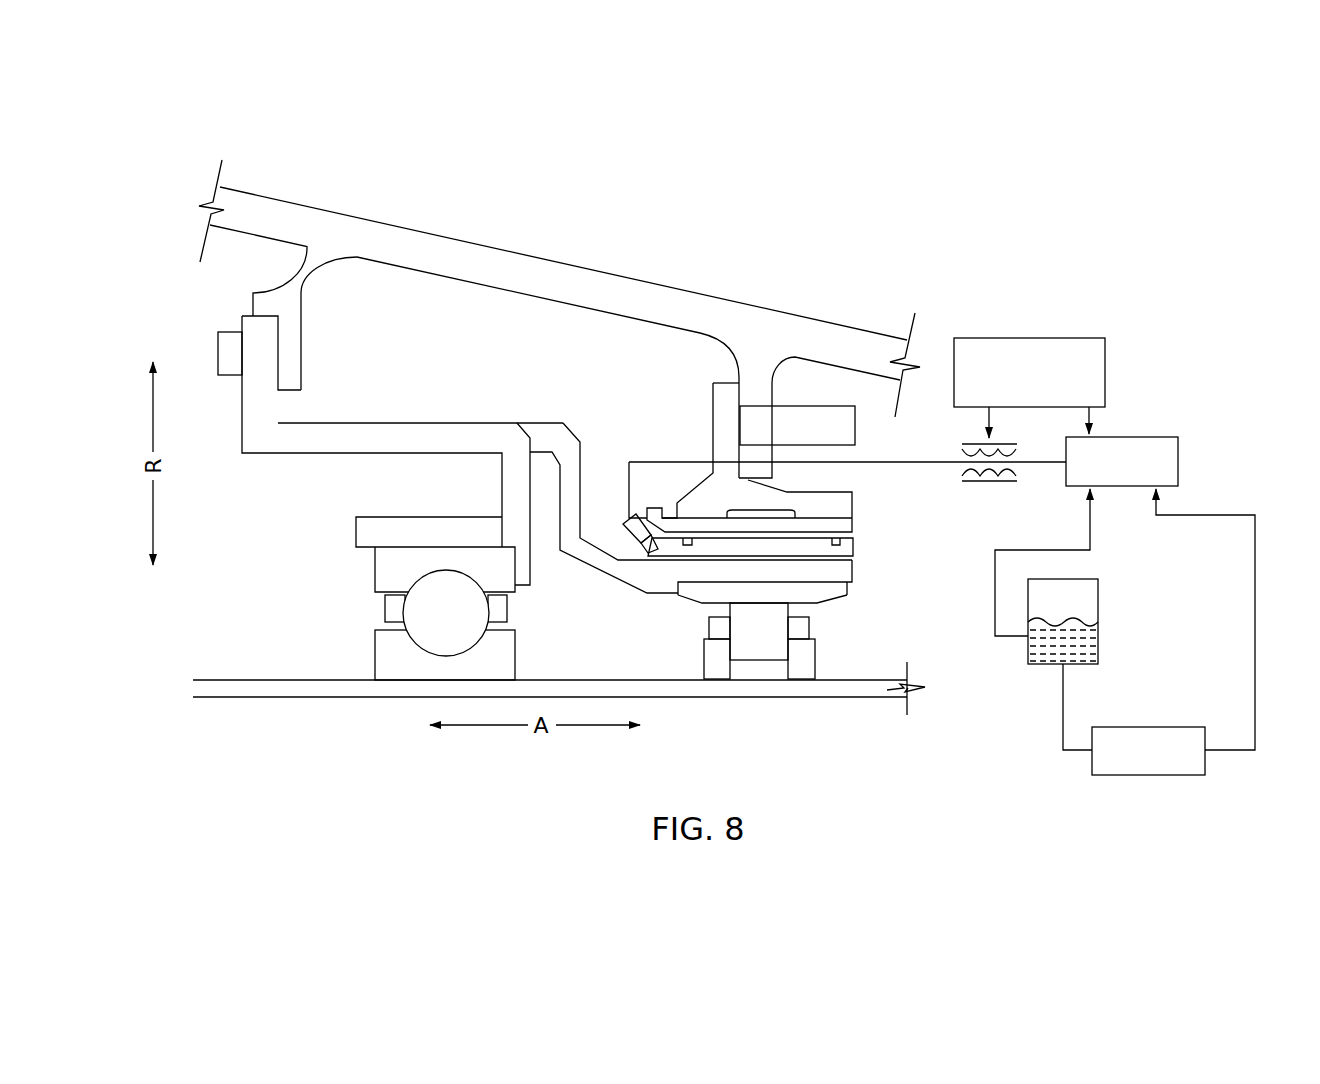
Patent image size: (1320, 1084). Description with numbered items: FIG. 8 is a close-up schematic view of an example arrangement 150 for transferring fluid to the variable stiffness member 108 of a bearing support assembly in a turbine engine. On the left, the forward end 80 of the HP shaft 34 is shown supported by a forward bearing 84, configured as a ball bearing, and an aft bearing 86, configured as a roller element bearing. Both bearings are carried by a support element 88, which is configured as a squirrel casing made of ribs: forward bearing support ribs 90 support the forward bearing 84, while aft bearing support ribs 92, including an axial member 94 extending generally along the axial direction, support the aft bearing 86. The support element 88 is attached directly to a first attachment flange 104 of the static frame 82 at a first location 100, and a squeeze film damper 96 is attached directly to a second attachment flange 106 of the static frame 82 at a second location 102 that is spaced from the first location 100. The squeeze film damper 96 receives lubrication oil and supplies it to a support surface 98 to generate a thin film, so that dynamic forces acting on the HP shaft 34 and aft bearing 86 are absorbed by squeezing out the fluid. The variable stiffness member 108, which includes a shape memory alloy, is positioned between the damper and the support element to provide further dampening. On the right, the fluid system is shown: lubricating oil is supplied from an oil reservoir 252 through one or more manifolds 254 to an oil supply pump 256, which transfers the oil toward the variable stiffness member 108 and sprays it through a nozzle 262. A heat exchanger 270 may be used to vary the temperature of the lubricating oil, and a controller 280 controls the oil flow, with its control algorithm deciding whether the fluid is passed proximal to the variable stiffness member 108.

The arrangement 150 is at (1137, 198).
The static frame 82 is at (450, 240).
The support element 88 is at (405, 290).
The first location 100 is at (345, 270).
The first attachment flange 104 is at (305, 320).
The second location 102 is at (782, 380).
The second attachment flange 106 is at (775, 397).
The aft bearing support ribs 92 is at (581, 462).
The nozzle 262 is at (628, 528).
The forward bearing support ribs 90 is at (445, 512).
The forward bearing 84 is at (356, 604).
The squeeze film damper 96 is at (855, 508).
The support surface 98 is at (860, 543).
The variable stiffness member 108 is at (855, 550).
The axial member 94 is at (650, 577).
The aft bearing 86 is at (840, 638).
The forward end 80 is at (345, 708).
The HP shaft 34 is at (755, 698).
The controller 280 is at (1030, 338).
The oil supply pump 256 is at (1145, 437).
The manifolds 254 is at (1092, 530).
The oil reservoir 252 is at (1098, 598).
The heat exchanger 270 is at (1175, 727).